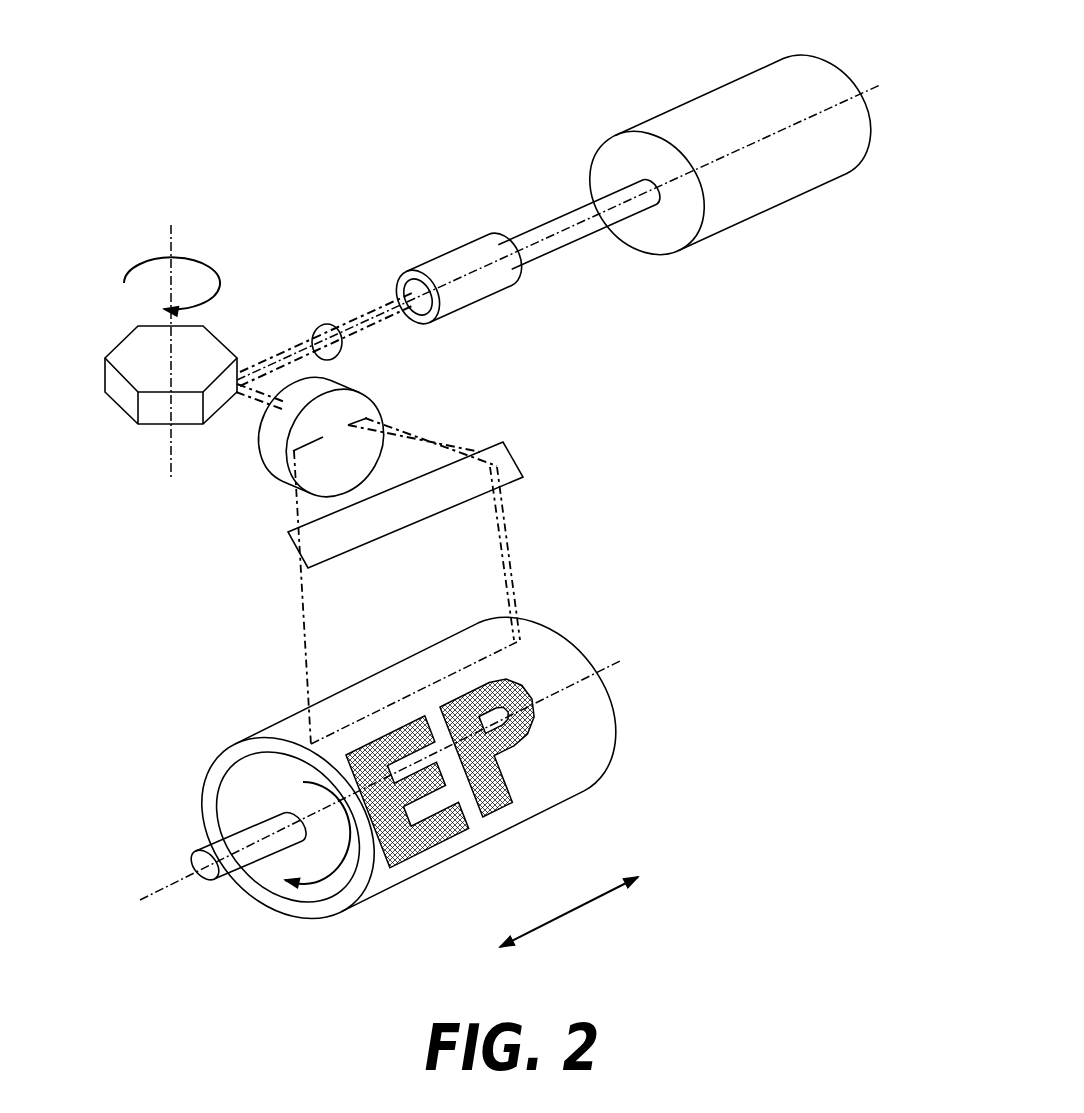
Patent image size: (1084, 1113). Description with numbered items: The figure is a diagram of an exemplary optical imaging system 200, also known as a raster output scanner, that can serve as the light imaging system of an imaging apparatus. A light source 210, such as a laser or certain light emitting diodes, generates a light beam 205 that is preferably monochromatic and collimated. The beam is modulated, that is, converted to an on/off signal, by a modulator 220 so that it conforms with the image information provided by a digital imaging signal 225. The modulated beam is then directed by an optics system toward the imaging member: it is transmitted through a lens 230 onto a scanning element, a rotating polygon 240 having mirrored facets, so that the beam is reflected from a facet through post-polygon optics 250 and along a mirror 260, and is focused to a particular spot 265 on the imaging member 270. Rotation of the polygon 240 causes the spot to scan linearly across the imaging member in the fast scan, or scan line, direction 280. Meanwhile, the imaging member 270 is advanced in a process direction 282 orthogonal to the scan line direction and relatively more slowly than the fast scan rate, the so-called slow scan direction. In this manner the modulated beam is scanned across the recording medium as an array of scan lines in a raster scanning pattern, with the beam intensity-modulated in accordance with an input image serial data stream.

The optical imaging system 200 is at (302, 83).
The light beam 205 is at (581, 240).
The light source 210 is at (767, 210).
The modulator 220 is at (480, 300).
The digital imaging signal 225 is at (456, 235).
The lens 230 is at (318, 327).
The rotating polygon 240 is at (123, 343).
The post-polygon optics 250 is at (268, 469).
The mirror 260 is at (290, 558).
The spot 265 is at (517, 641).
The imaging member 270 is at (593, 787).
The fast scan direction 280 is at (570, 912).
The process direction 282 is at (338, 868).